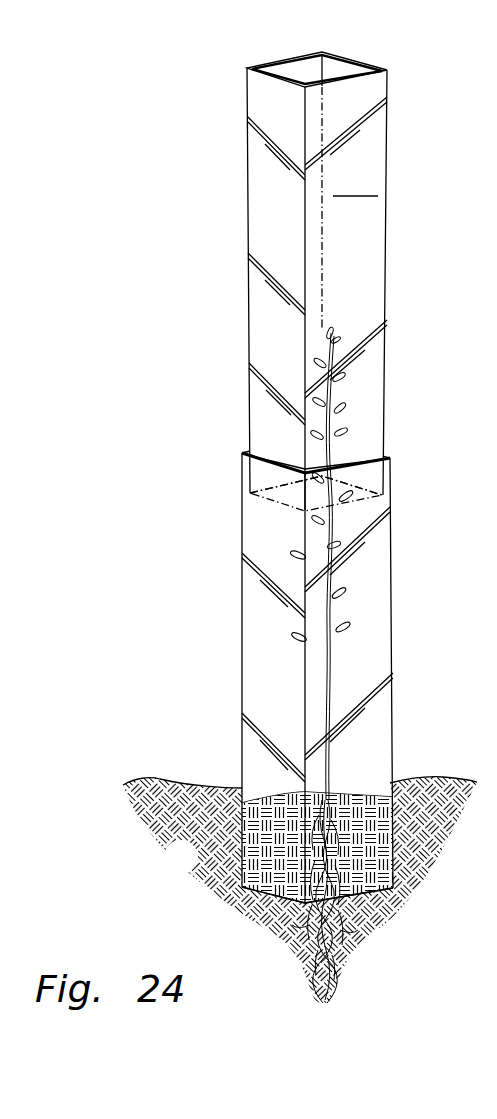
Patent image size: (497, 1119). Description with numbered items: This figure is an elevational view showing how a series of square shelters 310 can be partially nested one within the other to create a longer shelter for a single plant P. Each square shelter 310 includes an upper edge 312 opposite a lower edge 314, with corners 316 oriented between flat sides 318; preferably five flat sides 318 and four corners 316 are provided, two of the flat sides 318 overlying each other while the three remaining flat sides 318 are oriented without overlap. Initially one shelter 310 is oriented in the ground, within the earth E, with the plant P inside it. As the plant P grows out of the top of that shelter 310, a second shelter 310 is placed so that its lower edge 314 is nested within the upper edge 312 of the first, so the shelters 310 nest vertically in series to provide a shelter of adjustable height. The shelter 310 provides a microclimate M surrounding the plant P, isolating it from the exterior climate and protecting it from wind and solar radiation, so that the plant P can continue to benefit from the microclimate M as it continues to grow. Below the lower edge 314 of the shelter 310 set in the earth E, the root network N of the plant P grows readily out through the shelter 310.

The square shelter 310 is at (225, 485).
The upper edge 312 is at (293, 55).
The lower edge 314 is at (267, 496).
The corners 316 is at (255, 127).
The flat sides 318 is at (356, 185).
The plant P is at (323, 686).
The microclimate M is at (317, 820).
The earth E is at (300, 890).
The root network N is at (337, 952).